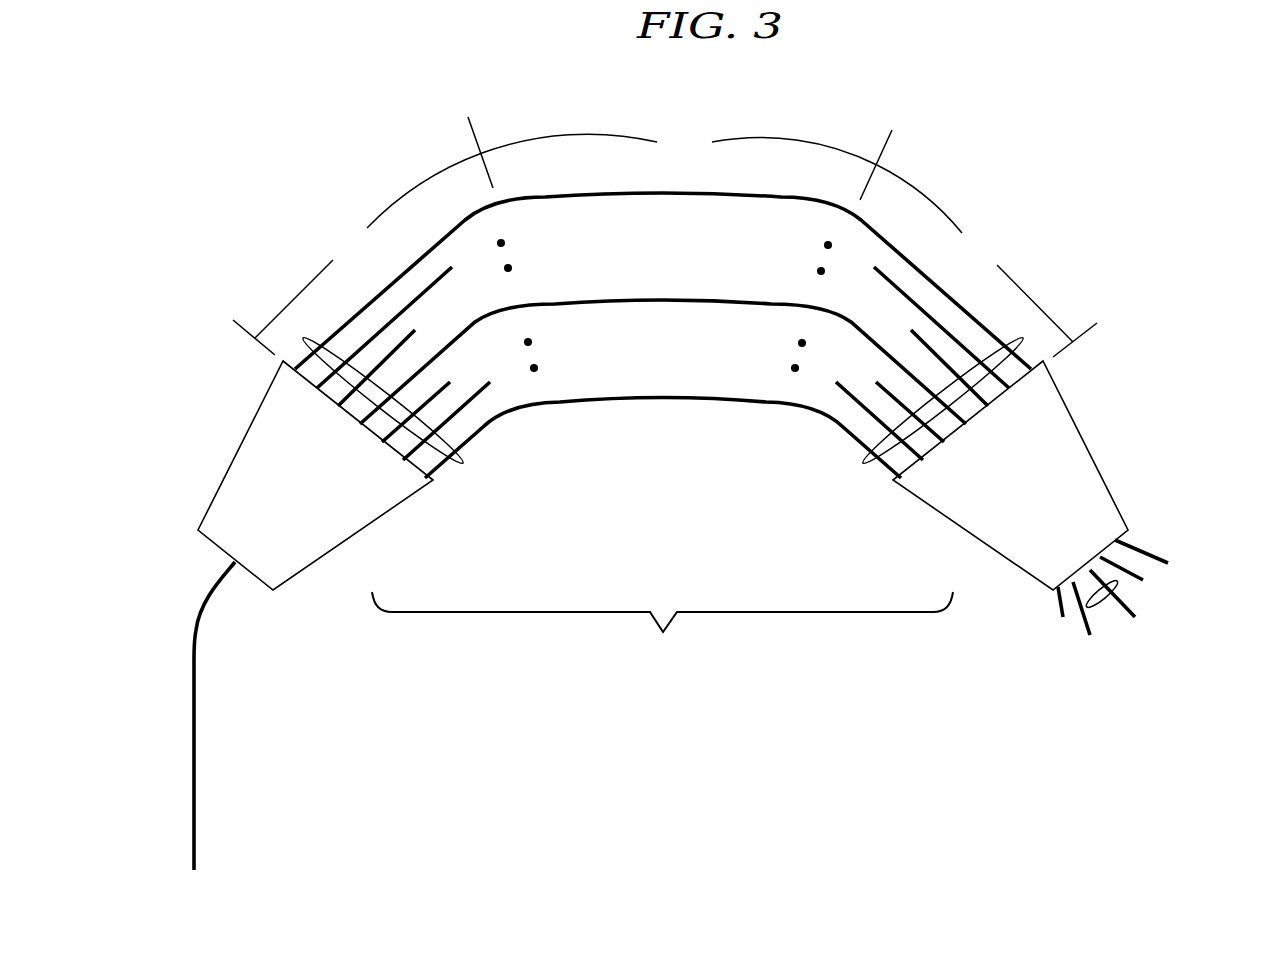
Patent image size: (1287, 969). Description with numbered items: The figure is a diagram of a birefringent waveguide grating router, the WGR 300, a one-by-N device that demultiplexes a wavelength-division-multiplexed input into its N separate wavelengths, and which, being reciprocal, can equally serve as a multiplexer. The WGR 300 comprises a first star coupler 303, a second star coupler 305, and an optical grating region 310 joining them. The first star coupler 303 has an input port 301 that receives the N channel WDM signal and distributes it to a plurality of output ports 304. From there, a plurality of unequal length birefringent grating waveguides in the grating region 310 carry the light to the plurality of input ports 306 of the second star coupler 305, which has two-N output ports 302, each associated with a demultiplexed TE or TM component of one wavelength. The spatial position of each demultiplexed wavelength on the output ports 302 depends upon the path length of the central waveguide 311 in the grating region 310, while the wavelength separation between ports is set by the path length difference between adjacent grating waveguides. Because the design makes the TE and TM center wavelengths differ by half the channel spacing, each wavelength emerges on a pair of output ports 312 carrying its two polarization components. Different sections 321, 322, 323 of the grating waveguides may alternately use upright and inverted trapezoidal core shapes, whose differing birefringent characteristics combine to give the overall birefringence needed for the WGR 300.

The birefringent waveguide grating router (WGR) 300 is at (662, 644).
The input port 301 is at (238, 566).
The output ports 302 is at (1057, 590).
The first star coupler 303 is at (241, 447).
The output ports of first star coupler 304 is at (463, 463).
The second star coupler 305 is at (1087, 449).
The input ports of second star coupler 306 is at (863, 463).
The optical grating region 310 is at (663, 335).
The central waveguide 311 is at (530, 304).
The pair of output ports 312 is at (1112, 603).
The first grating waveguide section 321 is at (357, 254).
The second grating waveguide section 322 is at (680, 158).
The third grating waveguide section 323 is at (987, 261).